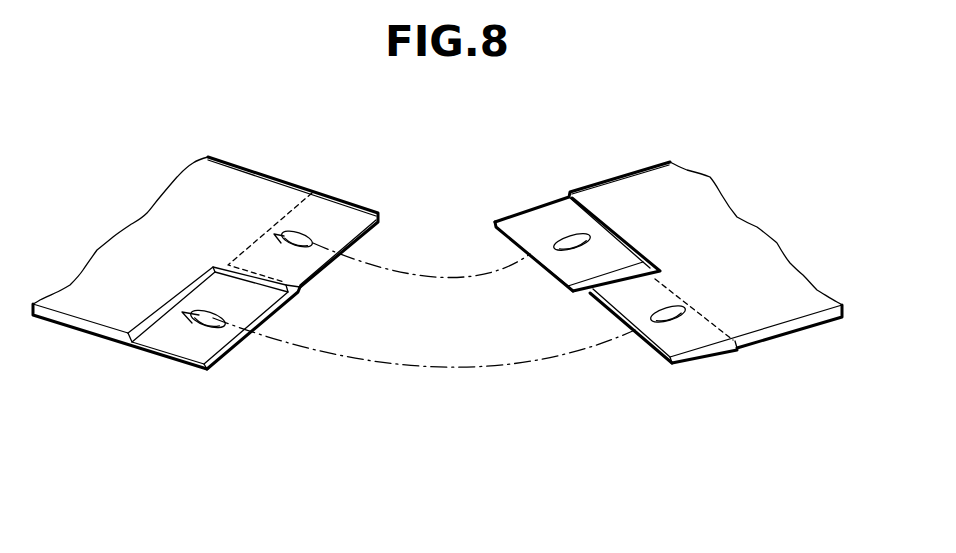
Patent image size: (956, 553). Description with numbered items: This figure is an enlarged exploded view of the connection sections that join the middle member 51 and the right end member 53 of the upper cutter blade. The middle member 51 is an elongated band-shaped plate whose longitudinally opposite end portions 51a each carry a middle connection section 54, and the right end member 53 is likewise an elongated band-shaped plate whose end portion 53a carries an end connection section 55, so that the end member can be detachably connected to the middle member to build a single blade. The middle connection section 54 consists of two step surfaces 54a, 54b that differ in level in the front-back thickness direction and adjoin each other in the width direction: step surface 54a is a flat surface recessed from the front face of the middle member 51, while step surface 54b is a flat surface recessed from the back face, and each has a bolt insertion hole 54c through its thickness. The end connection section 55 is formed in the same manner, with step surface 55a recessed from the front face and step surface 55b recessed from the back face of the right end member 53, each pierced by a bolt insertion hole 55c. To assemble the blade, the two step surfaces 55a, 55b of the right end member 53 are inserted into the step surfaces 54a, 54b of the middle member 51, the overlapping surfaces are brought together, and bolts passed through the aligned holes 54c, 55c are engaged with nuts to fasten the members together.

The middle member 51 is at (210, 274).
The longitudinally opposite end portion of the middle member 51a is at (238, 198).
The right end member 53 is at (663, 274).
The end portion of the right end member 53a is at (638, 200).
The middle connection section 54 is at (252, 314).
The step surface 54a is at (217, 338).
The step surface 54b is at (323, 274).
The bolt insertion hole 54c is at (307, 232).
The end connection section 55 is at (623, 313).
The step surface 55a is at (561, 262).
The step surface 55b is at (645, 350).
The bolt insertion hole 55c is at (570, 232).